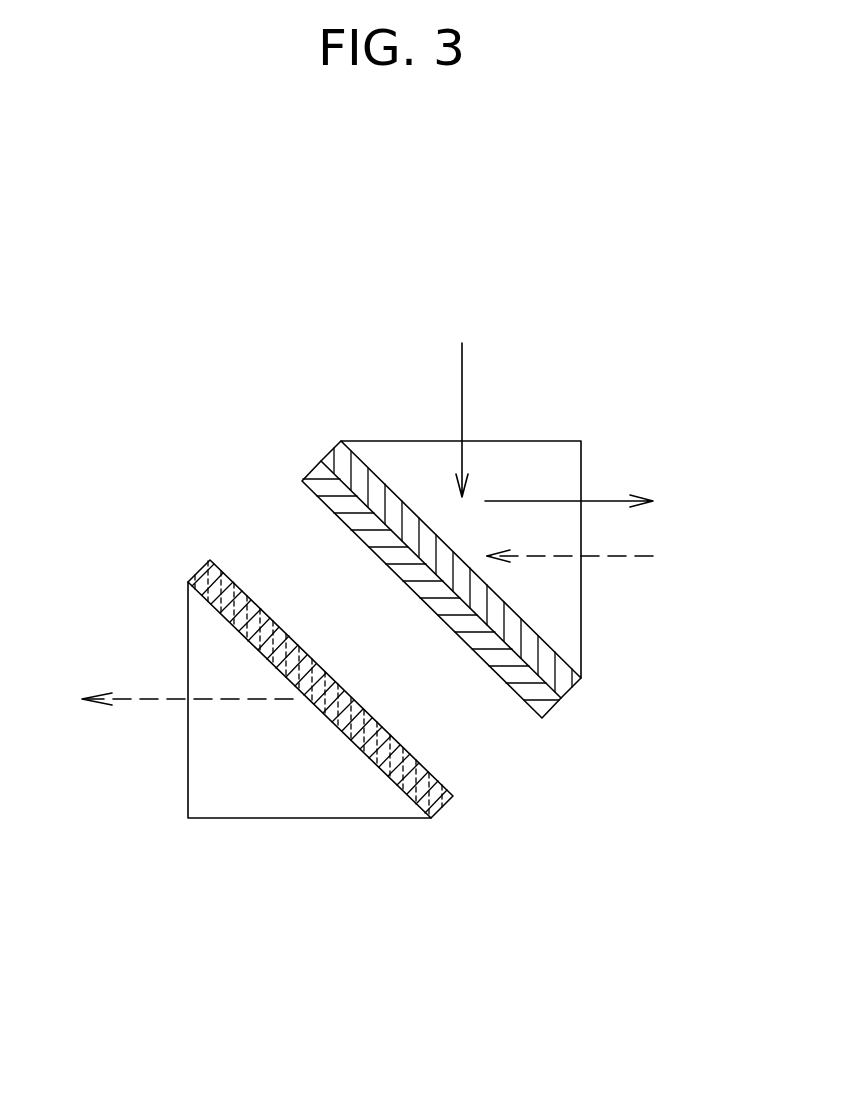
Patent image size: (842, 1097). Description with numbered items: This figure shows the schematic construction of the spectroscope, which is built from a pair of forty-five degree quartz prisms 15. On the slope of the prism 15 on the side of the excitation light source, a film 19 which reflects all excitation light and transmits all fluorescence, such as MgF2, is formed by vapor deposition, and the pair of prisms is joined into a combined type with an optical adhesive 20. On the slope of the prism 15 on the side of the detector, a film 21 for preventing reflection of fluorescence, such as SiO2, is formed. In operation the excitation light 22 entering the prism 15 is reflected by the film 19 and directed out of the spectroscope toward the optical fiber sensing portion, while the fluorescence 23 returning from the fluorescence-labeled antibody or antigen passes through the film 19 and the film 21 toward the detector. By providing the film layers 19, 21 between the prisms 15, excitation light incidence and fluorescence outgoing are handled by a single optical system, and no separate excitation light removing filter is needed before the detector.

The prism 15 is at (558, 603).
The film which reflects all excitation light and transmits all fluorescence 19 is at (570, 688).
The optical adhesive 20 is at (547, 715).
The film for preventing reflection of fluorescence 21 is at (437, 813).
The excitation light 22 is at (592, 498).
The fluorescence 23 is at (635, 557).